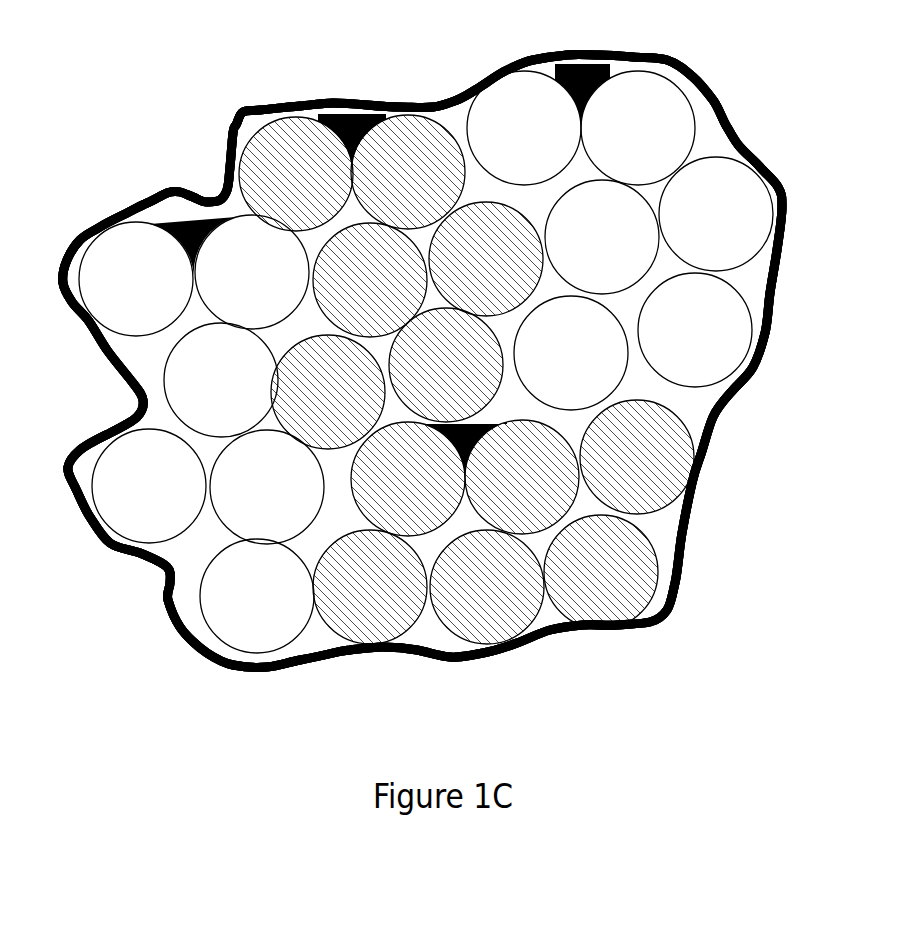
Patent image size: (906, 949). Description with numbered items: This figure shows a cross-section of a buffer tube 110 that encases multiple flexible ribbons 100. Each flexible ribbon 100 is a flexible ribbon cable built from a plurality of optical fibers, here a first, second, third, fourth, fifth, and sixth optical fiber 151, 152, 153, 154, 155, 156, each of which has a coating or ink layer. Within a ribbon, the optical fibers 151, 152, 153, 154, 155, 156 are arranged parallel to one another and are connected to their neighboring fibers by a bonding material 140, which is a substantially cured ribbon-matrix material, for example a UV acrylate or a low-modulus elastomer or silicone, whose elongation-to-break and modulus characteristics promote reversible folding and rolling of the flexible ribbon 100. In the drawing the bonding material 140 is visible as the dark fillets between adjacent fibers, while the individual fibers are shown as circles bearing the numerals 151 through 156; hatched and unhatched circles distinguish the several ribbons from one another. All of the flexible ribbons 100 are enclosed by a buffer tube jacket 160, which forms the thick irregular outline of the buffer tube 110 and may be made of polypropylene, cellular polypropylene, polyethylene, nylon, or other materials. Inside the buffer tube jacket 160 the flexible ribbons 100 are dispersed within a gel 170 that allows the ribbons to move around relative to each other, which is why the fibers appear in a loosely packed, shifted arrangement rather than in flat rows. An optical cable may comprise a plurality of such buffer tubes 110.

The flexible ribbon 100 is at (243, 125).
The buffer tube 110 is at (162, 38).
The bonding material 140 is at (182, 222).
The first optical fiber 151 is at (277, 187).
The second optical fiber 152 is at (388, 176).
The third optical fiber 153 is at (467, 266).
The fourth optical fiber 154 is at (428, 373).
The fifth optical fiber 155 is at (305, 401).
The sixth optical fiber 156 is at (343, 286).
The buffer tube jacket 160 is at (613, 55).
The gel 170 is at (147, 364).